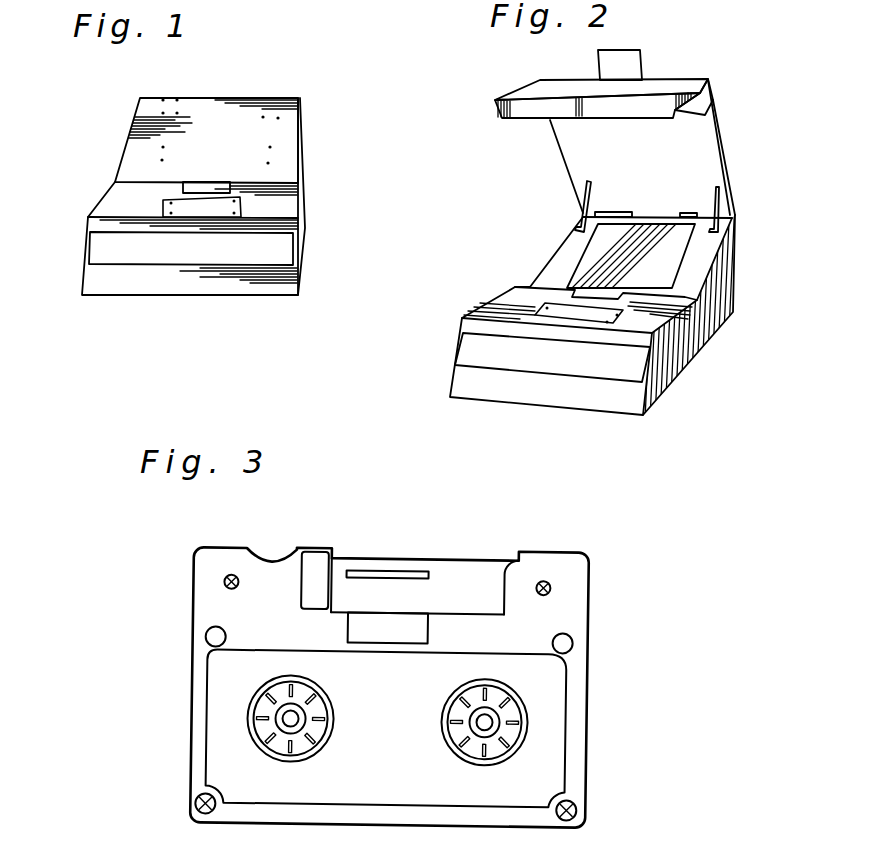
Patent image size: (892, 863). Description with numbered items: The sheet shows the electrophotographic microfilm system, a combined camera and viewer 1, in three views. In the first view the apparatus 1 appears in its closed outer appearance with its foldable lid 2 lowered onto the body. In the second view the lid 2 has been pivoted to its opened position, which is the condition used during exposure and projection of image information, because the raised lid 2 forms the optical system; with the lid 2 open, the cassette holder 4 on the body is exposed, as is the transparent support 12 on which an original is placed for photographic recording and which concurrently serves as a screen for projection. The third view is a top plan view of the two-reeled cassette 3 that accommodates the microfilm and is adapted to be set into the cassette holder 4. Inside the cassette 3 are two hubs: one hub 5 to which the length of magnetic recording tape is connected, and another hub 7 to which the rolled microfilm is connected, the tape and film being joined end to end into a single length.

In FIG. 1, the tape recording and reproducing apparatus 1 is at (327, 166).
In FIG. 2, the tape recording and reproducing apparatus 1 is at (757, 146).
In FIG. 1, the foldable lid 2 is at (105, 165).
In FIG. 2, the foldable lid 2 is at (547, 149).
In FIG. 1, the cassette holder 4 is at (222, 205).
In FIG. 2, the cassette holder 4 is at (593, 315).
In FIG. 2, the transparent support 12 is at (662, 255).
In FIG. 3, the two-reeled cassette 3 is at (600, 633).
In FIG. 3, the hub 5 is at (252, 732).
In FIG. 3, the hub 7 is at (510, 730).